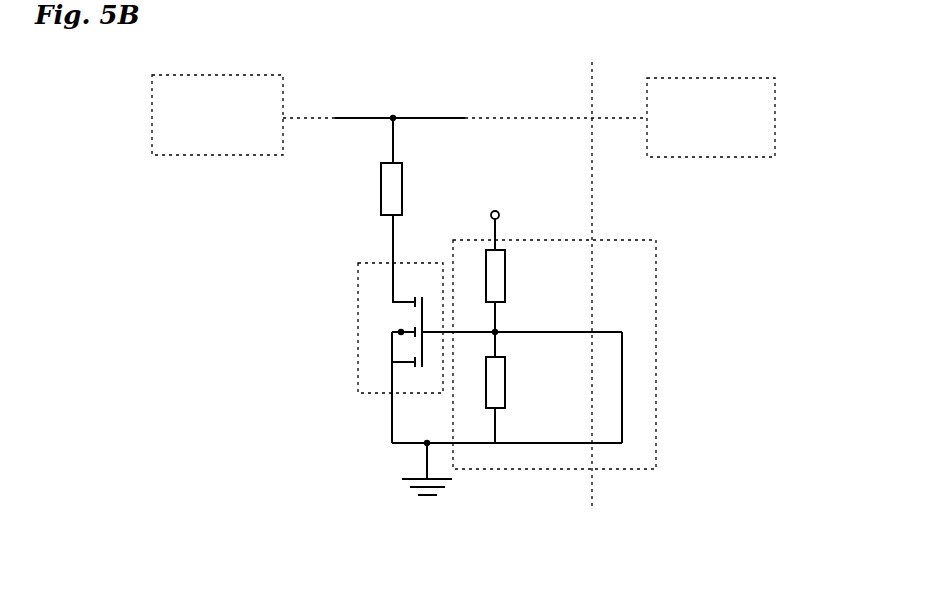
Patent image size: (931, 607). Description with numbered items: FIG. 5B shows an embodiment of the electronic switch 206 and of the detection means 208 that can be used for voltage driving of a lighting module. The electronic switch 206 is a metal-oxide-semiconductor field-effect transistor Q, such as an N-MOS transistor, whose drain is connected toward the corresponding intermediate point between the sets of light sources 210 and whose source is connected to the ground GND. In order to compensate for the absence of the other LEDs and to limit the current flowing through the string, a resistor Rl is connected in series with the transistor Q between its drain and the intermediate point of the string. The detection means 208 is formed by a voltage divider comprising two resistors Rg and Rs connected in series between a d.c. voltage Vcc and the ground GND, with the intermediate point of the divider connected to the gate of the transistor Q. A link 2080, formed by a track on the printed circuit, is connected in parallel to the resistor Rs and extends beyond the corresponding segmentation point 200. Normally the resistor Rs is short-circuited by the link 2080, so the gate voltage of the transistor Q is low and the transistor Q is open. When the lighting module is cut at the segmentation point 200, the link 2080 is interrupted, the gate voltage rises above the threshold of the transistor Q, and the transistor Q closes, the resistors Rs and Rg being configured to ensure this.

The set of light sources 210 is at (256, 70).
The segmentation point 200 is at (593, 515).
The detection means 208 is at (658, 238).
The electronic switch 206 is at (358, 262).
The link 2080 is at (626, 384).
The transistor Q is at (387, 323).
The resistor Rl is at (405, 175).
The resistor Rg is at (508, 283).
The resistor Rs is at (508, 390).
The d.c. voltage Vcc is at (492, 211).
The ground GND is at (448, 498).